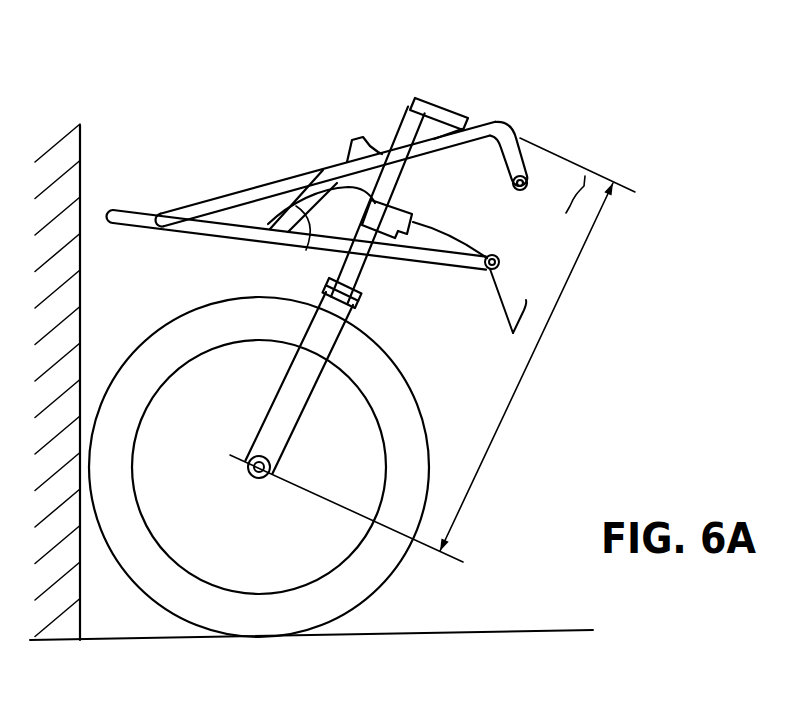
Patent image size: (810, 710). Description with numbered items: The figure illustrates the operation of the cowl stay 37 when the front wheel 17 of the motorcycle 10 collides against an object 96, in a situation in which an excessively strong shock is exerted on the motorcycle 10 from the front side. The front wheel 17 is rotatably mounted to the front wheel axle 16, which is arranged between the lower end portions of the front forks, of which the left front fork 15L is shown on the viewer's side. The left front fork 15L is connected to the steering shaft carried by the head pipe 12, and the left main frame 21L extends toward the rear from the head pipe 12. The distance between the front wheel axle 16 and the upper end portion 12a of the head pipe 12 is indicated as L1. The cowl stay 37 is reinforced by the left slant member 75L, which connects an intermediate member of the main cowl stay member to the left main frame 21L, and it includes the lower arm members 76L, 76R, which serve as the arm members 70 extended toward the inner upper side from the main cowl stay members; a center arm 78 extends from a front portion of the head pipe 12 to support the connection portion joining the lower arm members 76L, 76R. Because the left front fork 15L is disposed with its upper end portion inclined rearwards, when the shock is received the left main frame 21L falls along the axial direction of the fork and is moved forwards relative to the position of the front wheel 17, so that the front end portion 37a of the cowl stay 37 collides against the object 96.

The motorcycle 10 is at (298, 85).
The object 96 is at (83, 148).
The cowl stay 37 is at (262, 186).
The front end portion of the cowl stay 37a is at (113, 210).
The left slant member 75L is at (303, 177).
The center arm 78 is at (373, 178).
The head pipe 12 is at (398, 140).
The upper end portion of the head pipe 12a is at (432, 103).
The arm members 70 is at (293, 242).
The left lower arm member 76L is at (299, 249).
The right lower arm member 76R is at (299, 255).
The left main frame 21L is at (515, 293).
The left front fork 15L is at (290, 403).
The front wheel axle 16 is at (260, 478).
The front wheel 17 is at (357, 582).
The distance between the front wheel axle and the upper end portion of the head pipe L1 is at (421, 372).